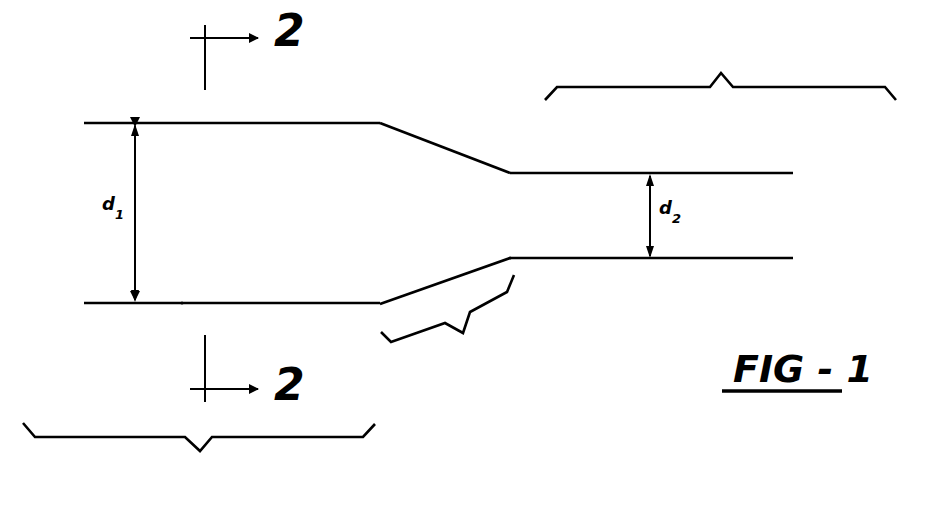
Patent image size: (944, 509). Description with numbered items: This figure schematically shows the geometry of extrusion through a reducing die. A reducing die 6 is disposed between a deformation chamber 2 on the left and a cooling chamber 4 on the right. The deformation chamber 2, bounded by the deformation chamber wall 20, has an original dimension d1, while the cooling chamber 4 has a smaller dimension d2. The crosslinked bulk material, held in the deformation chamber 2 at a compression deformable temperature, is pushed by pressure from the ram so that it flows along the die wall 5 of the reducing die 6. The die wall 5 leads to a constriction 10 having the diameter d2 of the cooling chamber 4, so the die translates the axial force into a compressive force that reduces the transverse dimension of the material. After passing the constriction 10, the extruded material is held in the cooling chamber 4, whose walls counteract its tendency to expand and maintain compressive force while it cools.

The deformation chamber 2 is at (201, 301).
The cooling chamber 4 is at (703, 152).
The die wall 5 is at (445, 281).
The reducing die 6 is at (447, 317).
The constriction 10 is at (510, 257).
The deformation chamber wall 20 is at (182, 303).